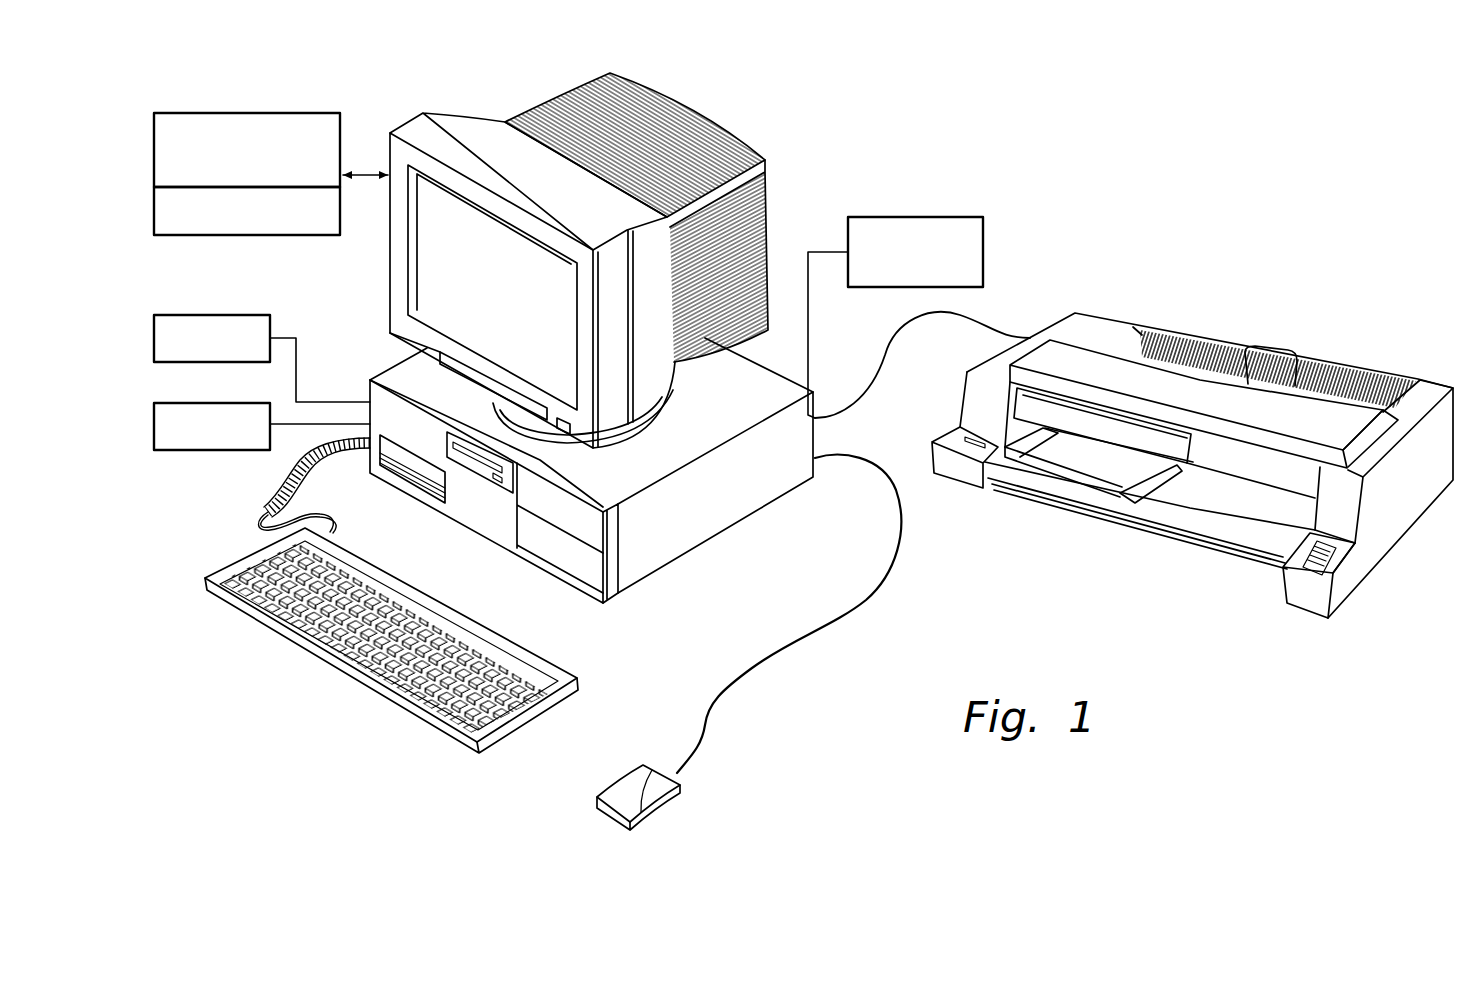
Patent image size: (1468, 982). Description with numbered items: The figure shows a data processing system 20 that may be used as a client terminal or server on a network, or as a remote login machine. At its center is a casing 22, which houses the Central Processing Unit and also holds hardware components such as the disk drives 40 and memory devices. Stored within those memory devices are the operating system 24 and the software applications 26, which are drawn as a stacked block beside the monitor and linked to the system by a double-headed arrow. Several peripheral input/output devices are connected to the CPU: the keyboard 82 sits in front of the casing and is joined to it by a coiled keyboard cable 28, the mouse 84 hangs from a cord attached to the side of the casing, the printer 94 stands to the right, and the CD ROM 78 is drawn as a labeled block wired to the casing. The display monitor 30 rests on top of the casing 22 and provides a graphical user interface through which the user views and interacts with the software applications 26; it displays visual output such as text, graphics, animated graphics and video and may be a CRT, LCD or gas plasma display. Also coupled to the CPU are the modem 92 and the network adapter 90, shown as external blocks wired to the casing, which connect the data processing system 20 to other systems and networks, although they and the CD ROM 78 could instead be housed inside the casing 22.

The data processing system 20 is at (975, 117).
The casing 22 is at (610, 618).
The operating system 24 is at (172, 235).
The software applications 26 is at (182, 80).
The keyboard cable 28 is at (288, 490).
The display monitor 30 is at (514, 298).
The disk drives 40 is at (477, 462).
The CD ROM 78 is at (182, 450).
The keyboard 82 is at (361, 686).
The mouse 84 is at (677, 802).
The network adapter 90 is at (985, 232).
The modem 92 is at (182, 362).
The printer 94 is at (1131, 298).